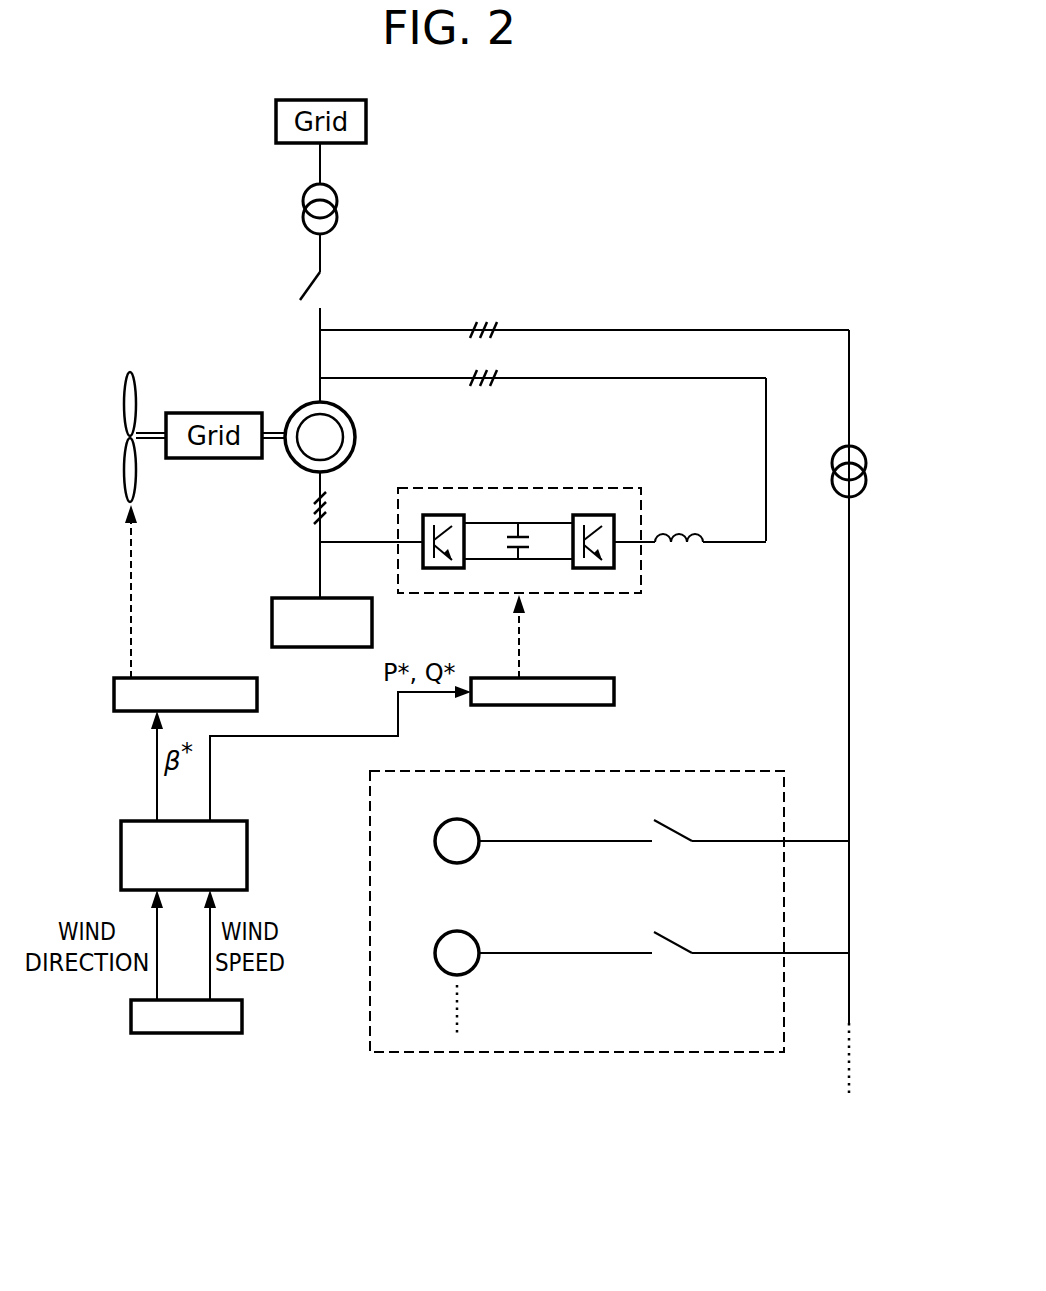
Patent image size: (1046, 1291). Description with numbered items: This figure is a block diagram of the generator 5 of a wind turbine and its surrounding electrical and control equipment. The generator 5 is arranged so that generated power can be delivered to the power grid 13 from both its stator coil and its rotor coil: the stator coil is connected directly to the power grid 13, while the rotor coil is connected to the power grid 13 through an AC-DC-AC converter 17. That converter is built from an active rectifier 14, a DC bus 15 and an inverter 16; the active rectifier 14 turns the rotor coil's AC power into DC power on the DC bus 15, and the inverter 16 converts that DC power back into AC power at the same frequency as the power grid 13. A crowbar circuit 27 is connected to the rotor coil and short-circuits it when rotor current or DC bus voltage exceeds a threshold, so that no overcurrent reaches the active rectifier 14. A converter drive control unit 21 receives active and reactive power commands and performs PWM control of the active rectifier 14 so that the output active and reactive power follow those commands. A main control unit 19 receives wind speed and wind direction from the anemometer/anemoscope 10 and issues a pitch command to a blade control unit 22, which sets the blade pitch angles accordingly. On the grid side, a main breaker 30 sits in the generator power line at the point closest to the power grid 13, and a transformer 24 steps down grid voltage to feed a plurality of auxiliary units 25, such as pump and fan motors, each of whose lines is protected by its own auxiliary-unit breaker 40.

The generator 5 is at (356, 435).
The anemometer/anemoscope 10 is at (184, 1033).
The power grid 13 is at (322, 163).
The active rectifier 14 is at (443, 568).
The DC bus 15 is at (553, 560).
The inverter 16 is at (615, 560).
The AC-DC-AC converter 17 is at (560, 488).
The main control unit 19 is at (247, 857).
The converter drive control unit 21 is at (614, 690).
The blade control unit 22 is at (186, 678).
The transformer 24 is at (858, 448).
The auxiliary units 25 is at (473, 821).
The crowbar circuit 27 is at (327, 647).
The main breaker 30 is at (304, 288).
The auxiliary-unit breakers 40 is at (668, 821).